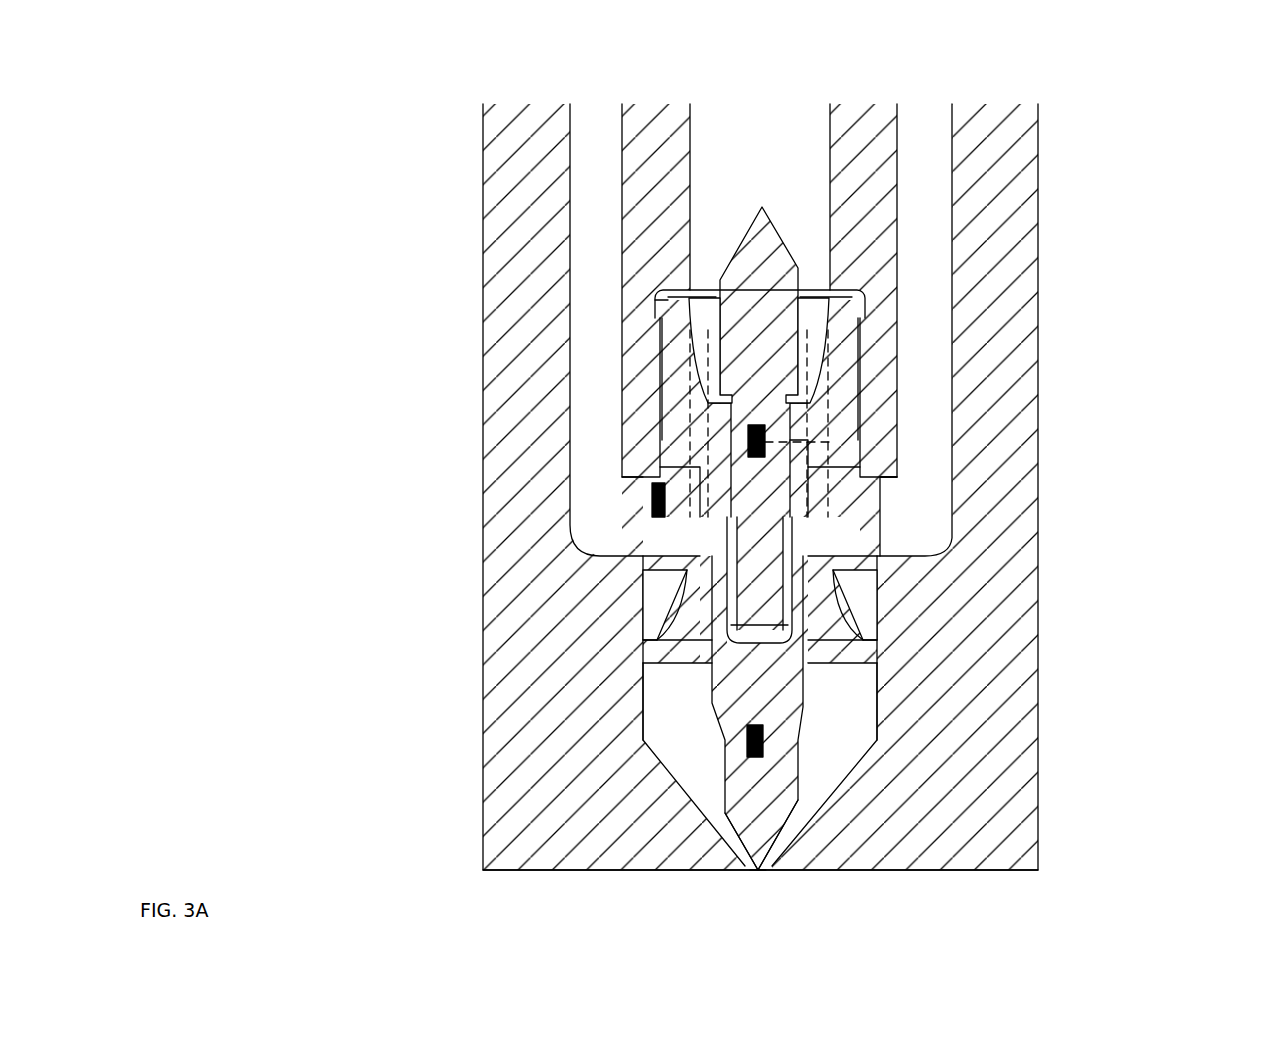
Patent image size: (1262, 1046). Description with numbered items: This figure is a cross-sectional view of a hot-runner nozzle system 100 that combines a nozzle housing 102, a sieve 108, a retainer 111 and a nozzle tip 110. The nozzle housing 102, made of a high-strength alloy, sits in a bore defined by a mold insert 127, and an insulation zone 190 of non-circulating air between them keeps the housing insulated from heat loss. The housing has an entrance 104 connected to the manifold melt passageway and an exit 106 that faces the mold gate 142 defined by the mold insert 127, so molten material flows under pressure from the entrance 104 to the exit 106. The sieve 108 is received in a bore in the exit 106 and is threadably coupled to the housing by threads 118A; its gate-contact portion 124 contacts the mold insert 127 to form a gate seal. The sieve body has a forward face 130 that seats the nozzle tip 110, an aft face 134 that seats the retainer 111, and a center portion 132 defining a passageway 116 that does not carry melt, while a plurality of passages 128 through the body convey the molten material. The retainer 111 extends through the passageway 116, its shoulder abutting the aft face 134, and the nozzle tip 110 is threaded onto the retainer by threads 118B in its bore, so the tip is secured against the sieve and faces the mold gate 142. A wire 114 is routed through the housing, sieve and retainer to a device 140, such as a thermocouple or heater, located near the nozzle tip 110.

The hot-runner nozzle system 100 is at (274, 212).
The nozzle housing 102 is at (882, 150).
The entrance 104 is at (776, 160).
The exit 106 is at (832, 742).
The sieve 108 is at (668, 538).
The nozzle tip 110 is at (765, 800).
The retainer 111 is at (770, 235).
The wire 114 is at (832, 296).
The passageway 116 is at (785, 570).
The threads 118A is at (858, 412).
The threads 118B is at (862, 618).
The gate-contact portion 124 is at (875, 655).
The mold insert 127 is at (510, 247).
The passages 128 is at (700, 425).
The forward face 130 is at (640, 742).
The center portion 132 is at (805, 484).
The aft face 134 is at (690, 290).
The device 140 is at (748, 452).
The mold gate 142 is at (768, 884).
The insulation zone 190 is at (585, 168).